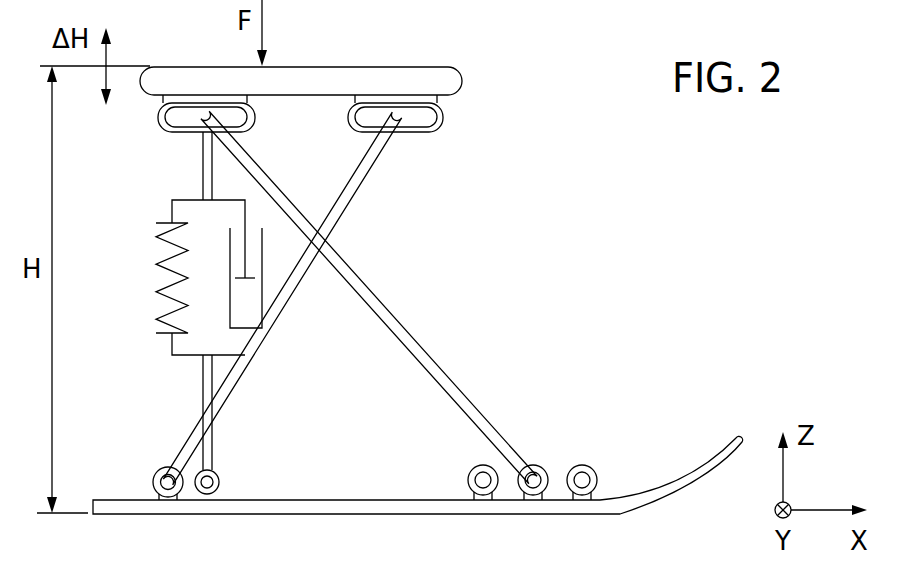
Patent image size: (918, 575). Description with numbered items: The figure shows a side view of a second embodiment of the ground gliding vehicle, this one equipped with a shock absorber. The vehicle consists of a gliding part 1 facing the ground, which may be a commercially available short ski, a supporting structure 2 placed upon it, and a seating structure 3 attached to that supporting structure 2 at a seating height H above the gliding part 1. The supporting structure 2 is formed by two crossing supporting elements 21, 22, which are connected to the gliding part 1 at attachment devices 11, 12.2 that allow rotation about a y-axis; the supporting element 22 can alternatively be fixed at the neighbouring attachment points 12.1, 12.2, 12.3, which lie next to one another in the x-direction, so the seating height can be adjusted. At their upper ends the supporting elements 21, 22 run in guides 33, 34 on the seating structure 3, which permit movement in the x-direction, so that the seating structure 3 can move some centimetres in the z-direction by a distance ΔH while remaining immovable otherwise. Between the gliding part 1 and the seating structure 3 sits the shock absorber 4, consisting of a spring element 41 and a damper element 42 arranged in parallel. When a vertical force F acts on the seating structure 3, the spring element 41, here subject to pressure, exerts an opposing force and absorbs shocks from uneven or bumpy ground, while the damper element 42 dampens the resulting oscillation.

The gliding part 1 is at (303, 505).
The supporting structure 2 is at (418, 247).
The seating structure 3 is at (328, 80).
The shock absorber 4 is at (142, 229).
The attachment point 11 is at (152, 478).
The attachment point 12.1 is at (468, 478).
The attachment point 12.2 is at (540, 466).
The attachment point 12.3 is at (590, 467).
The supporting element 21 is at (355, 183).
The supporting element 22 is at (433, 363).
The guide 33 is at (443, 115).
The guide 34 is at (158, 115).
The spring element 41 is at (166, 288).
The damper element 42 is at (245, 295).